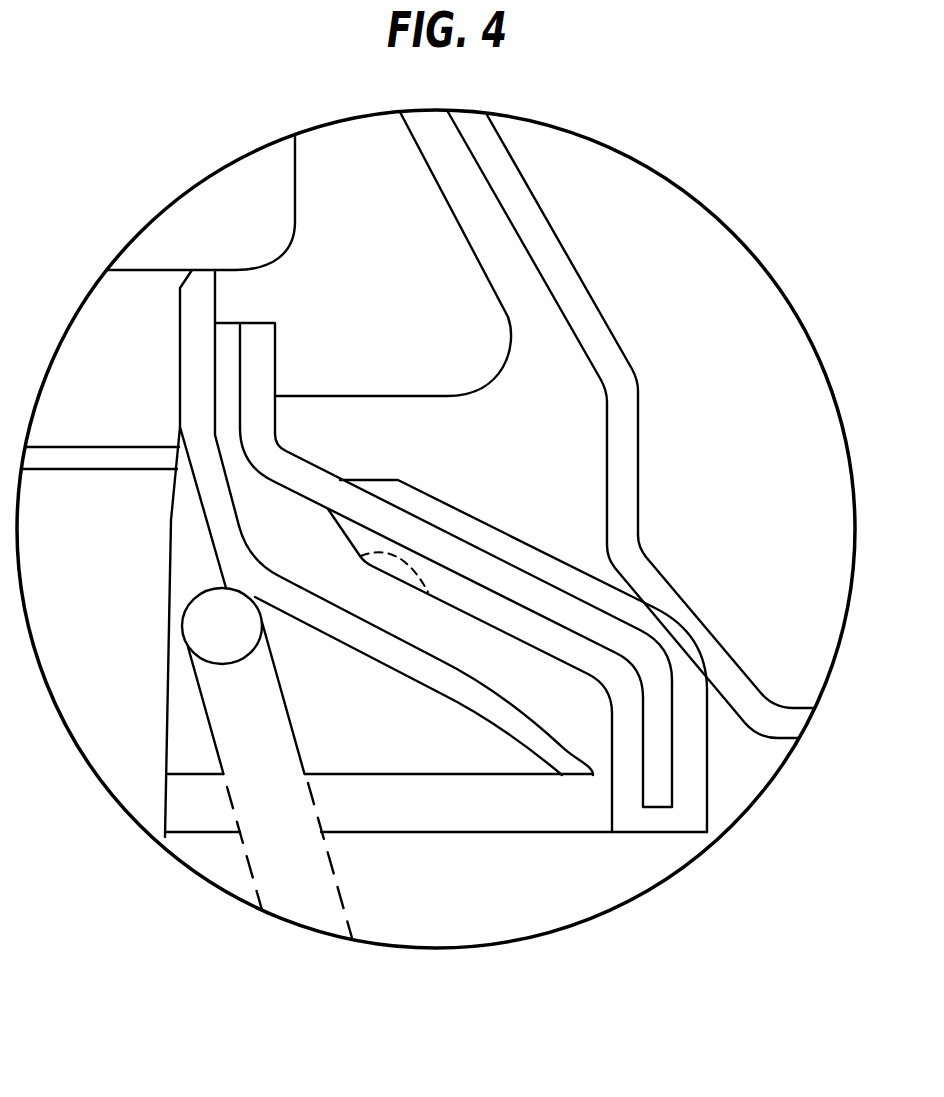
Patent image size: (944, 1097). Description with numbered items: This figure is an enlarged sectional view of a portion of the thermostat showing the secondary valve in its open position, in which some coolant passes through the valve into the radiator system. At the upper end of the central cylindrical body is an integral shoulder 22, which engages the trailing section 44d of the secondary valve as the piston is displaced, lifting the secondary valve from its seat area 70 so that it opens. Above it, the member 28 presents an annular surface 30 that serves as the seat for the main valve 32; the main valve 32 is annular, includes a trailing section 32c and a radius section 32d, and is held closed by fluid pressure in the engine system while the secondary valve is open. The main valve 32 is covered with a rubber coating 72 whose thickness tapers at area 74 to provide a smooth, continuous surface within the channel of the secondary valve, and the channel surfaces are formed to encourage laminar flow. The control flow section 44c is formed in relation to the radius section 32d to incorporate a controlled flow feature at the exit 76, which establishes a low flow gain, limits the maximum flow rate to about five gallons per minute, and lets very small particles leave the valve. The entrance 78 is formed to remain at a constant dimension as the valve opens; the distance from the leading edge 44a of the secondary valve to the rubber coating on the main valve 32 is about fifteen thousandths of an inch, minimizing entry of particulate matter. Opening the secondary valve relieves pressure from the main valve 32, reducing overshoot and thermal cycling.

The shoulder 22 is at (283, 178).
The member 28 is at (591, 340).
The annular surface 30 is at (681, 626).
The main valve 32 is at (660, 793).
The trailing section 32c is at (256, 445).
The radius section 32d is at (256, 357).
The leading edge 44a is at (586, 763).
The control flow section 44c is at (205, 467).
The trailing section 44d is at (200, 300).
The seat area 70 is at (397, 553).
The coating 72 is at (493, 617).
The taper area 74 is at (357, 563).
The exit 76 is at (250, 507).
The entrance 78 is at (598, 792).